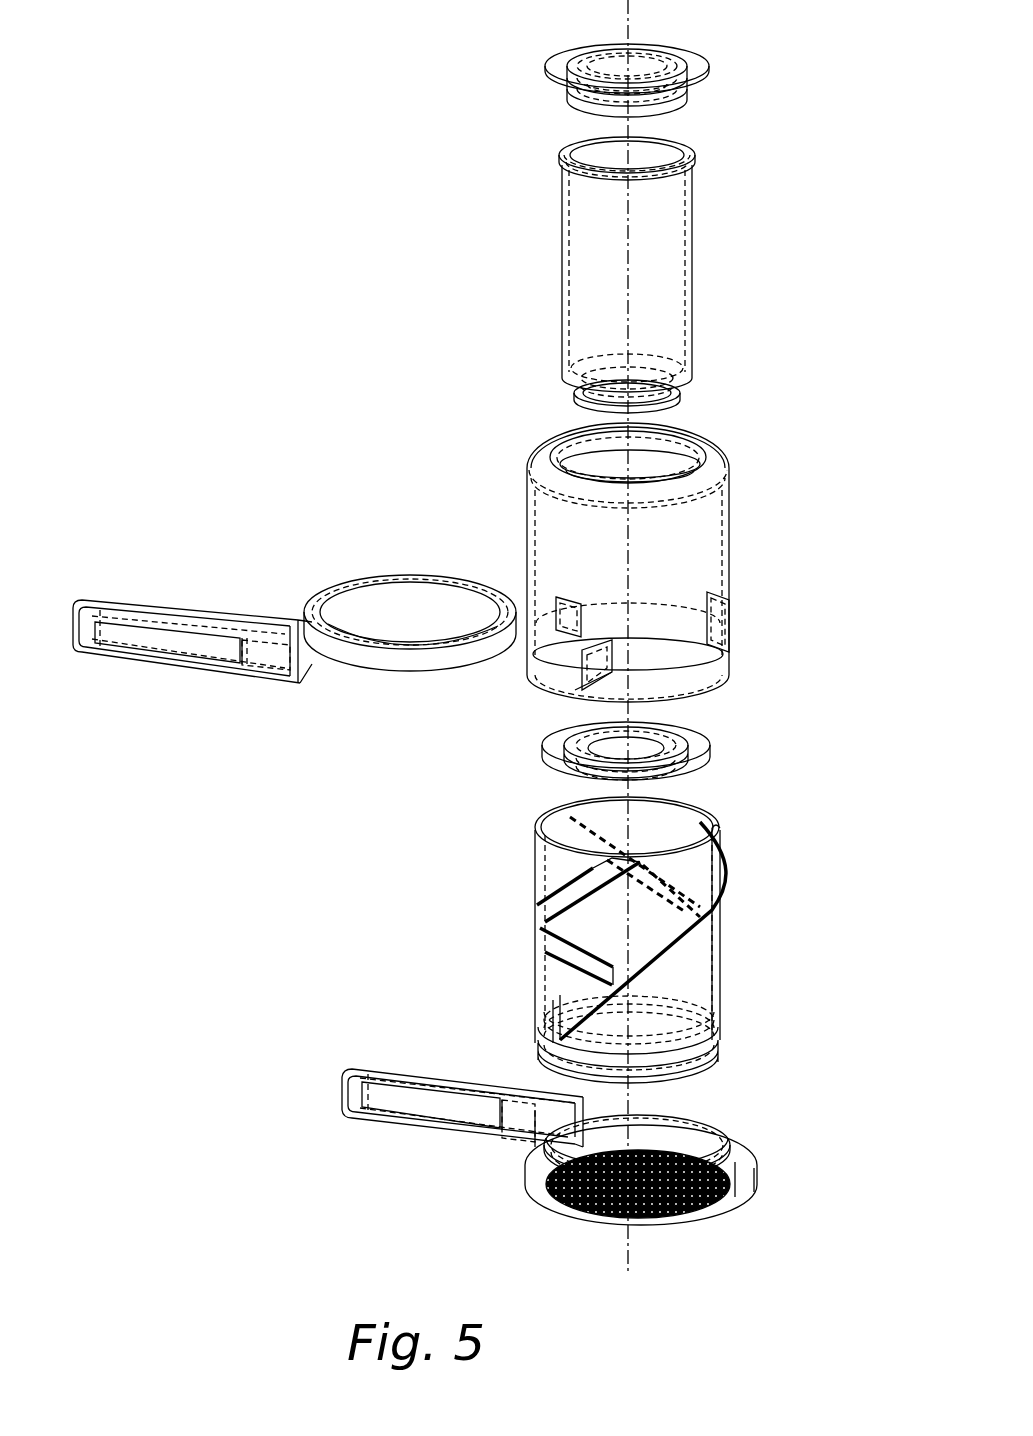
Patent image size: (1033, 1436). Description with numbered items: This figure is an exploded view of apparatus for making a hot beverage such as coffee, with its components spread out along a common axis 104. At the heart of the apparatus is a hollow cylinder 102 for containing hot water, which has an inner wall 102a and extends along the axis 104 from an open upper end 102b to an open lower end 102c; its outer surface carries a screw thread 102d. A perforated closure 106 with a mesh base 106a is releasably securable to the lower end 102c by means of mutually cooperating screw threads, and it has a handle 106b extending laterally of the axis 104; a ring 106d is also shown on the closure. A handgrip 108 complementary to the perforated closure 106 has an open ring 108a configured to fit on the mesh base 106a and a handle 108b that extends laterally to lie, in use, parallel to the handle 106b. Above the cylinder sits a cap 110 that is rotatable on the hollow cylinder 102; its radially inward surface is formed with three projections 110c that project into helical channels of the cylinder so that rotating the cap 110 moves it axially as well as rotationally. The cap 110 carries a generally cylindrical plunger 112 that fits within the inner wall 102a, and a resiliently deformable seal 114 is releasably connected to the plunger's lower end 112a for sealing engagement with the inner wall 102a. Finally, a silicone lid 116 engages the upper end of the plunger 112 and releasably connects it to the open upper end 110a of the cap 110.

The hollow cylinder 102 is at (632, 917).
The inner wall 102a is at (685, 807).
The open upper end 102b is at (560, 822).
The open lower end 102c is at (712, 1075).
The screw thread 102d is at (547, 1040).
The axis 104 is at (632, 1245).
The perforated closure 106 is at (580, 1142).
The mesh base 106a is at (585, 1216).
The handle 106b is at (366, 1068).
The inner ring 106d is at (712, 1102).
The handgrip 108 is at (294, 612).
The ring 108a is at (392, 668).
The handle 108b is at (138, 640).
The cap 110 is at (632, 549).
The open upper end of the cap 110a is at (575, 437).
The projections 110c is at (560, 600).
The plunger 112 is at (686, 259).
The lower end of the plunger 112a is at (681, 152).
The resiliently deformable seal 114 is at (709, 732).
The silicone lid 116 is at (702, 46).